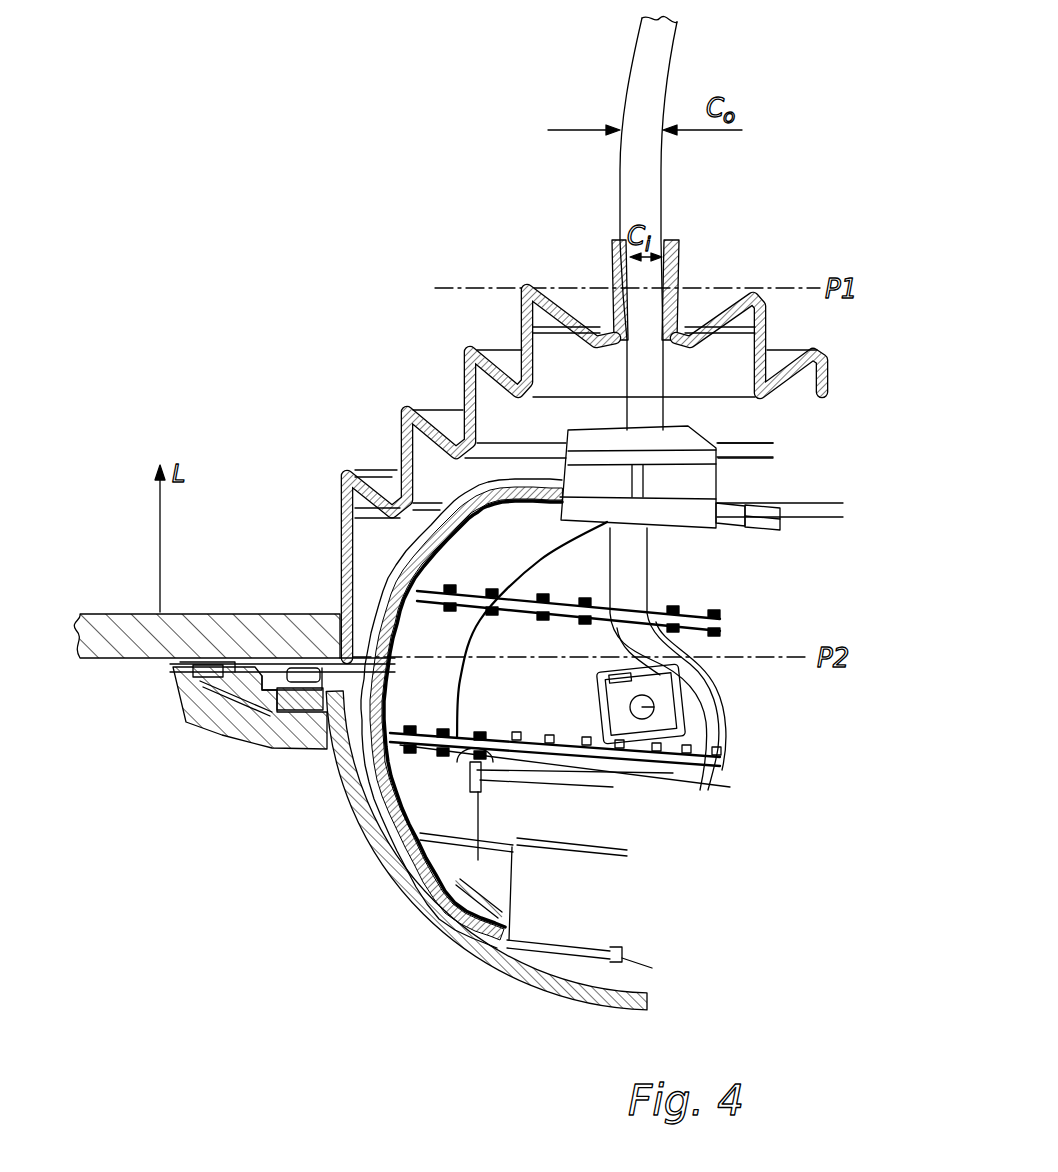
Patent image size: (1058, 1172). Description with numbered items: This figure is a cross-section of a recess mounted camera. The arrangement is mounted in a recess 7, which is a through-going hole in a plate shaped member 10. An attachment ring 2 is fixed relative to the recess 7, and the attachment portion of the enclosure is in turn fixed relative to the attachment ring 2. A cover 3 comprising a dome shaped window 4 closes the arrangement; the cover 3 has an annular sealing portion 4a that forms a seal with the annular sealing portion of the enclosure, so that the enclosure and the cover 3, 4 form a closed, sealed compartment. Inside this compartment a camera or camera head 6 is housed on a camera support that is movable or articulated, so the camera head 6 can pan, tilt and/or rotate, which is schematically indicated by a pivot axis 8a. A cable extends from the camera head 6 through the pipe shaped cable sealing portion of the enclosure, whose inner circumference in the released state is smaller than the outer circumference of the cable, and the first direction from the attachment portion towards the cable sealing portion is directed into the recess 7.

The attachment ring 2 is at (207, 673).
The cover 3 is at (227, 743).
The dome shaped window 4 is at (430, 920).
The annular sealing portion 4a is at (288, 748).
The camera head 6 is at (553, 913).
The recess 7 is at (336, 628).
The pivot axis 8a is at (653, 707).
The plate shaped member 10 is at (100, 665).